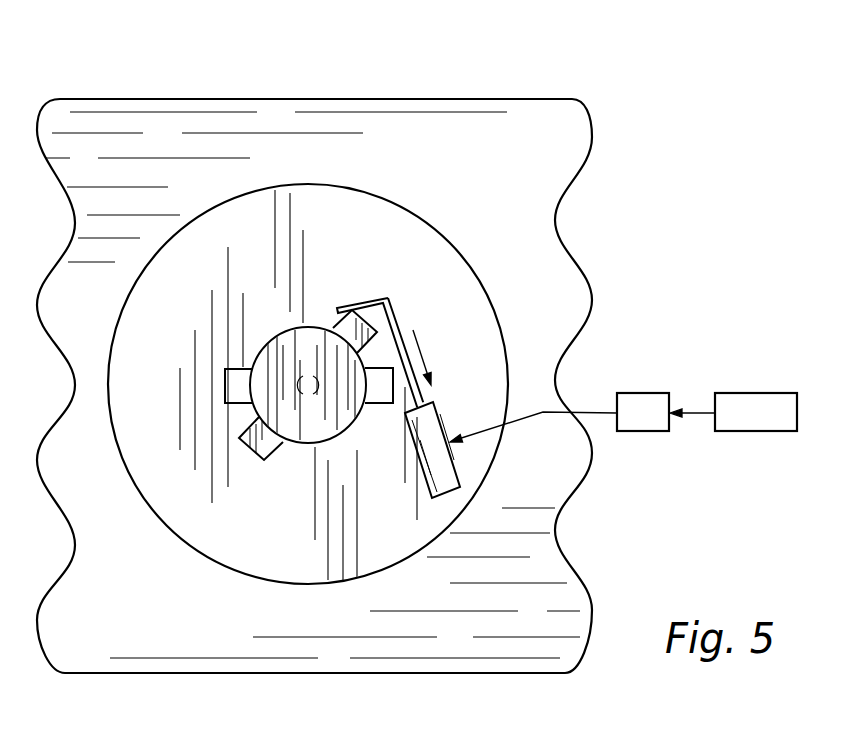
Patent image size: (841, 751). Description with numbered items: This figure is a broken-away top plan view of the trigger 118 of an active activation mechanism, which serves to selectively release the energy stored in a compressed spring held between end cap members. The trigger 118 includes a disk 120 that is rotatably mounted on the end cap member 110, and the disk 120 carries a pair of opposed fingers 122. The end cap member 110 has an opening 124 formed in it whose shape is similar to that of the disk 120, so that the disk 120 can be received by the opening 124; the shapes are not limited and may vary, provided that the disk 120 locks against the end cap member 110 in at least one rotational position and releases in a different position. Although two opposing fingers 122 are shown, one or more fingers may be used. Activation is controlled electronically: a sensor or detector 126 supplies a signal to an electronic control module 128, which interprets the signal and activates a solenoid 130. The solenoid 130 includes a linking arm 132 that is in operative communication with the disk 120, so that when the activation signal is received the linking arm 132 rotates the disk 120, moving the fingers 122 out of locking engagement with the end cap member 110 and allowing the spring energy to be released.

The end cap member 110 is at (547, 160).
The trigger 118 is at (404, 304).
The disk 120 is at (284, 328).
The opposed fingers 122 is at (352, 310).
The opening 124 is at (225, 378).
The sensor or detector 126 is at (758, 393).
The electronic control module 128 is at (646, 393).
The solenoid 130 is at (462, 468).
The linking arm 132 is at (392, 318).